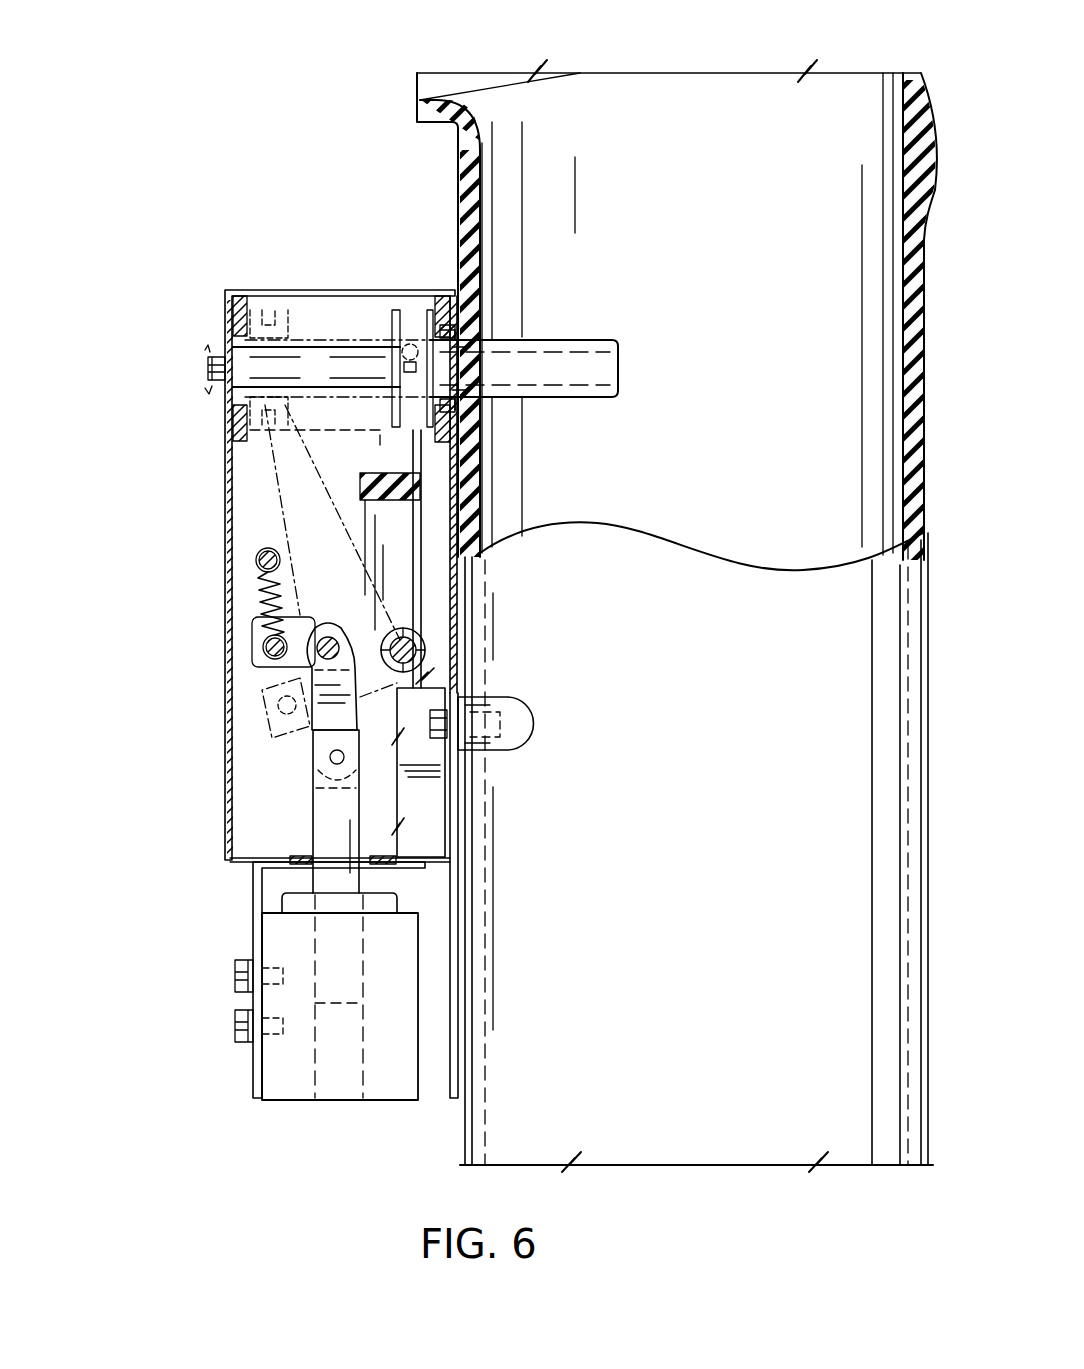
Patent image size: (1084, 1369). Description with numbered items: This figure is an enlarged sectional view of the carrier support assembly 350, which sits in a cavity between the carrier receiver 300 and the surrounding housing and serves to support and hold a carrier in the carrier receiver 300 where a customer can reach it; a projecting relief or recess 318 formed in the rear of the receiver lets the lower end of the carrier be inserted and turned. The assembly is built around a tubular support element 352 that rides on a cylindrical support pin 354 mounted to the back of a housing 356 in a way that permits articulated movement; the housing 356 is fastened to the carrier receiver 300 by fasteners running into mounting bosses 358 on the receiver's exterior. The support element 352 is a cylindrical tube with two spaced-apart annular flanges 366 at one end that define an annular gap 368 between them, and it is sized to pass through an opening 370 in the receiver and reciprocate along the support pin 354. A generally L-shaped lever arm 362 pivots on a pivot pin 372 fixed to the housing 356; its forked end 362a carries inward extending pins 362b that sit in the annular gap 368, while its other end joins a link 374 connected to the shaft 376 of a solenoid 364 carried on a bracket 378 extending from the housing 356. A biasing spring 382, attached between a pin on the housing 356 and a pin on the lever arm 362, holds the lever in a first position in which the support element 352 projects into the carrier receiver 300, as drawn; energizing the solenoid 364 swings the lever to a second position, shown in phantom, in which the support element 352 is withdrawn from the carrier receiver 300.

The carrier receiver 300 is at (457, 192).
The projecting relief or recess 318 is at (905, 125).
The carrier support assembly 350 is at (263, 630).
The tubular support element 352 is at (600, 340).
The cylindrical support pin 354 is at (313, 356).
The housing 356 is at (318, 290).
The mounting bosses 358 is at (515, 742).
The lever arm 362 is at (412, 523).
The forked end 362a is at (380, 445).
The inward extending pins 362b is at (398, 346).
The solenoid 364 is at (288, 1097).
The annular flanges 366 is at (394, 340).
The annular gap 368 is at (428, 322).
The opening 370 is at (470, 400).
The pivot pin 372 is at (425, 648).
The link 374 is at (320, 700).
The shaft 376 is at (318, 813).
The bracket 378 is at (253, 893).
The biasing spring 382 is at (258, 600).